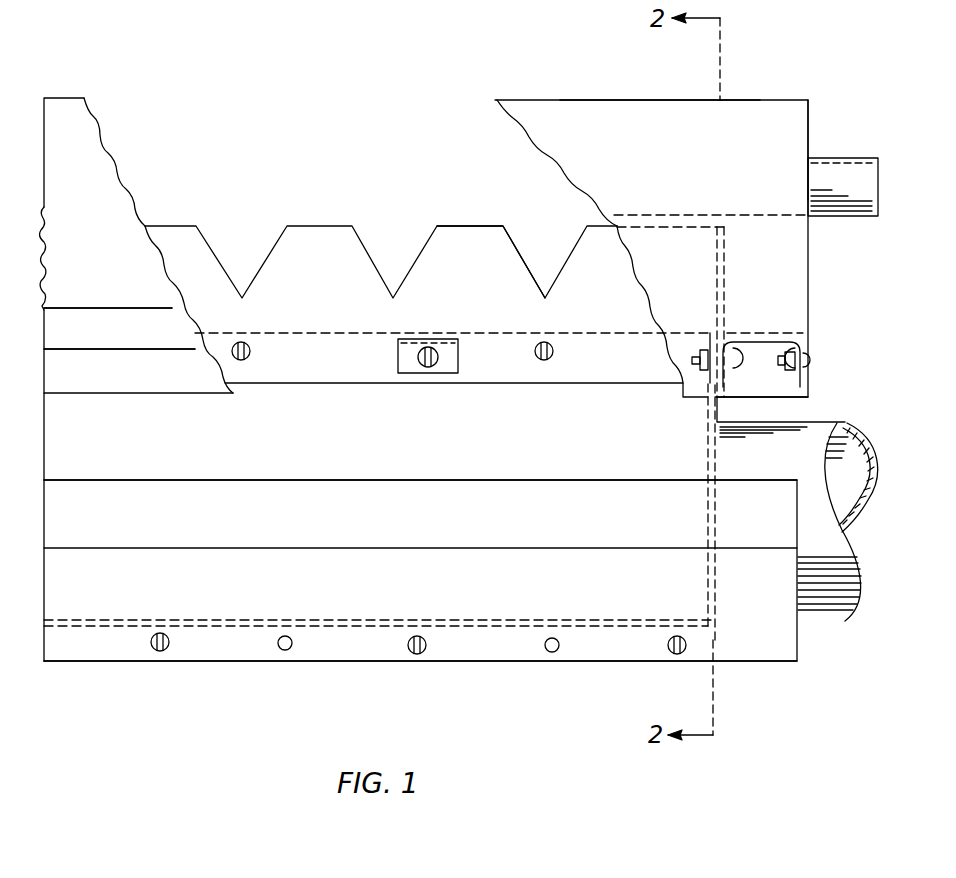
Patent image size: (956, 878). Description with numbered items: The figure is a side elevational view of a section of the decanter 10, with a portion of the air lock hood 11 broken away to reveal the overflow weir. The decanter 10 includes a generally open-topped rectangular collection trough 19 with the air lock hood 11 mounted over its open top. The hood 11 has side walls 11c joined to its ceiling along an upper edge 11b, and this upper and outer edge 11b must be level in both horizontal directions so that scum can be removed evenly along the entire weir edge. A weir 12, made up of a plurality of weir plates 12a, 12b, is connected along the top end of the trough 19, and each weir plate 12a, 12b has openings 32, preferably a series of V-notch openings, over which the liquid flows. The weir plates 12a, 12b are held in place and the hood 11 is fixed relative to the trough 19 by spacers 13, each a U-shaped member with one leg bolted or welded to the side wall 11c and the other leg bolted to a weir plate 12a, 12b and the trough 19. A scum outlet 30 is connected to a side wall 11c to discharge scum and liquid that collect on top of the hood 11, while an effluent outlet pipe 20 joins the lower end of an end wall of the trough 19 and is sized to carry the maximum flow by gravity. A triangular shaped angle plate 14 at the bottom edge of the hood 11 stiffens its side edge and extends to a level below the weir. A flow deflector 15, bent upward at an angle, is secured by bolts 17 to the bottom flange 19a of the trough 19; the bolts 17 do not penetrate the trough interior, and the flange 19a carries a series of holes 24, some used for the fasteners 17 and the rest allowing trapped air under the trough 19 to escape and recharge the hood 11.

The decanter 10 is at (575, 78).
The air lock hood 11 is at (90, 268).
The upper edge 11b is at (781, 118).
The side walls 11c is at (656, 118).
The weir 12 is at (434, 282).
The weir plate 12a is at (476, 250).
The weir plate 12b is at (722, 255).
The spacers 13 is at (426, 346).
The triangular shaped angle plate 14 is at (151, 307).
The flow deflector 15 is at (396, 480).
The bolts 17 is at (413, 654).
The collection trough 19 is at (452, 516).
The bottom flange 19a is at (241, 646).
The effluent outlet pipe 20 is at (873, 434).
The holes 24 is at (558, 651).
The scum outlet 30 is at (832, 165).
The openings 32 is at (406, 256).